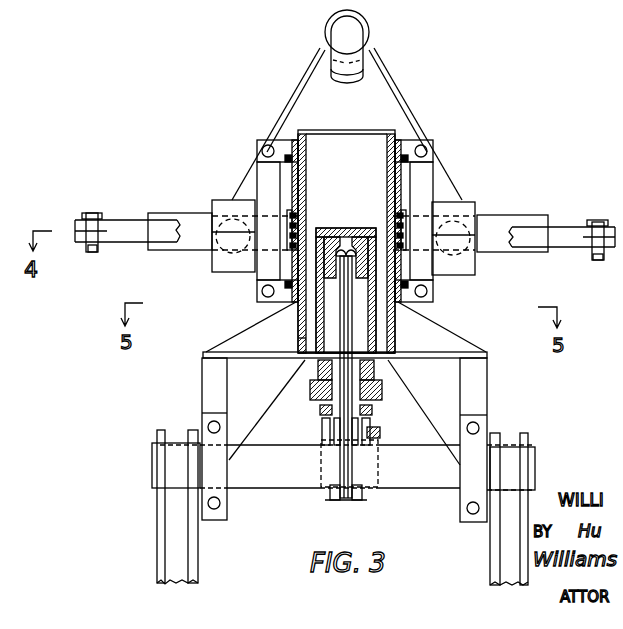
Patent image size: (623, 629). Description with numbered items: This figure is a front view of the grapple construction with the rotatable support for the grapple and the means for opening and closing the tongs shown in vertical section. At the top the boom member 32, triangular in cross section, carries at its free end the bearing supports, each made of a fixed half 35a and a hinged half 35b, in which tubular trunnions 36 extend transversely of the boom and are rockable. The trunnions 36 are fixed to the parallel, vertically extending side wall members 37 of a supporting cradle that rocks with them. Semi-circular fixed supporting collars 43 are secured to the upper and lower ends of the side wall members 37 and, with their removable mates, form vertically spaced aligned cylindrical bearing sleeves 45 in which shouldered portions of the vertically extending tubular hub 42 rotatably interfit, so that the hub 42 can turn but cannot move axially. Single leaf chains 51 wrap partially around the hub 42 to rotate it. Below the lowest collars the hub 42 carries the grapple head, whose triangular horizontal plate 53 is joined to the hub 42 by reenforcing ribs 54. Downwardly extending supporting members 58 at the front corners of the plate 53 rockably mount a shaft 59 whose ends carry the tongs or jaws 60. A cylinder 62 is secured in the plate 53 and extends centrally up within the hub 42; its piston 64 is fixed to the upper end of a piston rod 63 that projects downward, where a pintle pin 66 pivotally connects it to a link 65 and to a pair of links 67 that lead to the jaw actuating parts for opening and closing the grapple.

The boom member 32 is at (398, 84).
The semi-circular fixed supporting collar 43 is at (425, 128).
The reenforcing rib 54 is at (350, 327).
The tubular hub 42 is at (305, 196).
The piston 64 is at (376, 246).
The cylinder 62 is at (298, 338).
The piston rod 63 is at (312, 362).
The link 65 is at (368, 422).
The pintle pin 66 is at (380, 434).
The links 67 is at (365, 493).
The horizontal plate 53 is at (463, 352).
The supporting member 58 is at (264, 400).
The shaft 59 is at (300, 440).
The tongs or jaws 60 is at (175, 548).
The side wall member 37 is at (266, 180).
The cylindrical bearing sleeve 45 is at (306, 150).
The single leaf chain 51 is at (300, 228).
The tubular trunnion 36 is at (195, 215).
The hinged half of bearing support 35b is at (497, 160).
The fixed half of bearing support 35a is at (216, 265).